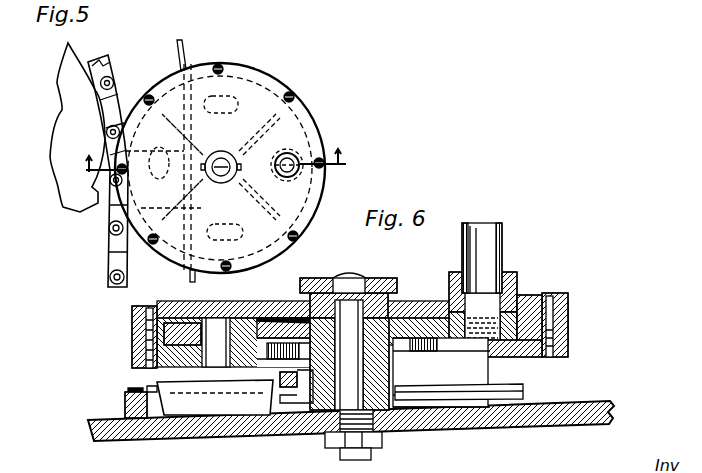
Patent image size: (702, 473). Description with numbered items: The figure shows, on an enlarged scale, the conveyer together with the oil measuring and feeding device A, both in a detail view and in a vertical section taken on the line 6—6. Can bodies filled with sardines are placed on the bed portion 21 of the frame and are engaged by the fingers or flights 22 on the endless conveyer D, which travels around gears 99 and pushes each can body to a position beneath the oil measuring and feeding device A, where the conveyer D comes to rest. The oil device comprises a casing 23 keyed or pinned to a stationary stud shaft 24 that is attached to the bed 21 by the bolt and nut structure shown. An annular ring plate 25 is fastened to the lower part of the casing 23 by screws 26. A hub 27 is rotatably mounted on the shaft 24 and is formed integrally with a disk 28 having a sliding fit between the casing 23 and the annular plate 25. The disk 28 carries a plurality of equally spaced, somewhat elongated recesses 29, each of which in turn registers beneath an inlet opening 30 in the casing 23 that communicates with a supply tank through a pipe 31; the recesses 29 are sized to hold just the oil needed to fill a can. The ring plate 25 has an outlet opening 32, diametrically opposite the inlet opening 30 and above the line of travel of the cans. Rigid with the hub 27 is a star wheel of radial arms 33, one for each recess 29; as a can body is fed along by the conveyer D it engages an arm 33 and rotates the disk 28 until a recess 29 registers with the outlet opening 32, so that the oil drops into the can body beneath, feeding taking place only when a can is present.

In FIG. 5, the oil measuring and feeding device A is at (322, 118).
In FIG. 6, the oil measuring and feeding device A is at (570, 312).
In FIG. 5, the endless conveyer D is at (108, 250).
In FIG. 6, the endless conveyer D is at (125, 395).
In FIG. 5, the section line 6— 6 is at (216, 166).
In FIG. 6, the bed portion 21 is at (220, 432).
In FIG. 5, the fingers or flights 22 is at (146, 88).
In FIG. 6, the fingers or flights 22 is at (150, 385).
In FIG. 5, the casing 23 is at (274, 73).
In FIG. 6, the casing 23 is at (532, 298).
In FIG. 5, the stationary stud shaft 24 is at (226, 153).
In FIG. 6, the stationary stud shaft 24 is at (352, 273).
In FIG. 6, the annular ring plate 25 is at (518, 350).
In FIG. 5, the screws 26 is at (293, 99).
In FIG. 6, the screws 26 is at (555, 300).
In FIG. 6, the hub 27 is at (395, 374).
In FIG. 6, the disk 28 is at (185, 325).
In FIG. 5, the recesses 29 is at (250, 67).
In FIG. 6, the recesses 29 is at (453, 303).
In FIG. 5, the inlet opening 30 is at (299, 171).
In FIG. 6, the inlet opening 30 is at (517, 292).
In FIG. 5, the pipe 31 is at (301, 160).
In FIG. 6, the pipe 31 is at (503, 252).
In FIG. 5, the opening 32 is at (163, 177).
In FIG. 6, the opening 32 is at (214, 359).
In FIG. 5, the radial arms 33 is at (223, 168).
In FIG. 6, the radial arms 33 is at (525, 392).
In FIG. 5, the gears 99 is at (62, 114).